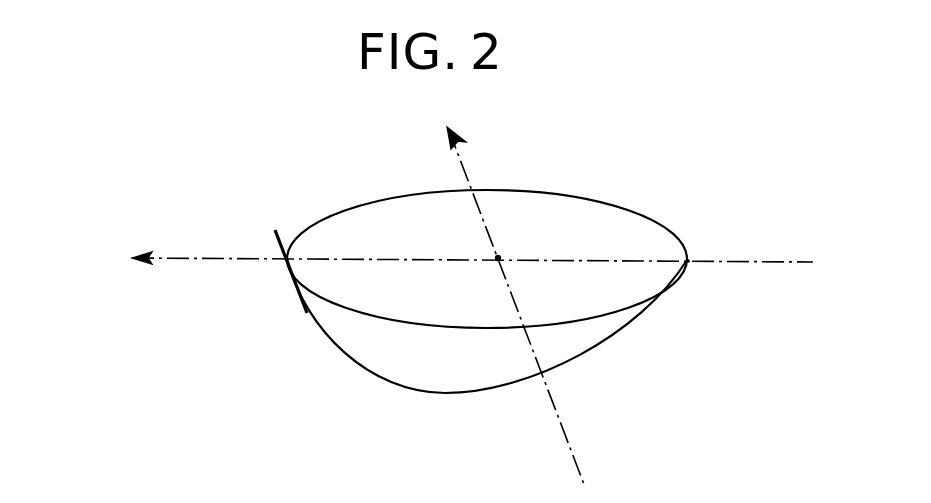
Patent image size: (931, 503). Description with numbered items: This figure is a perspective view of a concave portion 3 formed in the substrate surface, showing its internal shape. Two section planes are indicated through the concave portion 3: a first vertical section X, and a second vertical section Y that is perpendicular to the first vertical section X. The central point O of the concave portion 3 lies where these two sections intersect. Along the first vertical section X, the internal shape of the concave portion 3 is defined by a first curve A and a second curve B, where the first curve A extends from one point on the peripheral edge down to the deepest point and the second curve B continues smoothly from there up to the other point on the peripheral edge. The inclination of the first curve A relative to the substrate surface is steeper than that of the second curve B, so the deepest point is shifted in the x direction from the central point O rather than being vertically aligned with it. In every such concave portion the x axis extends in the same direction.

The concave portion 3 is at (580, 197).
The central point O is at (499, 257).
The first curve A is at (286, 270).
The second curve B is at (689, 263).
The first vertical section X is at (795, 262).
The second vertical section Y is at (565, 437).